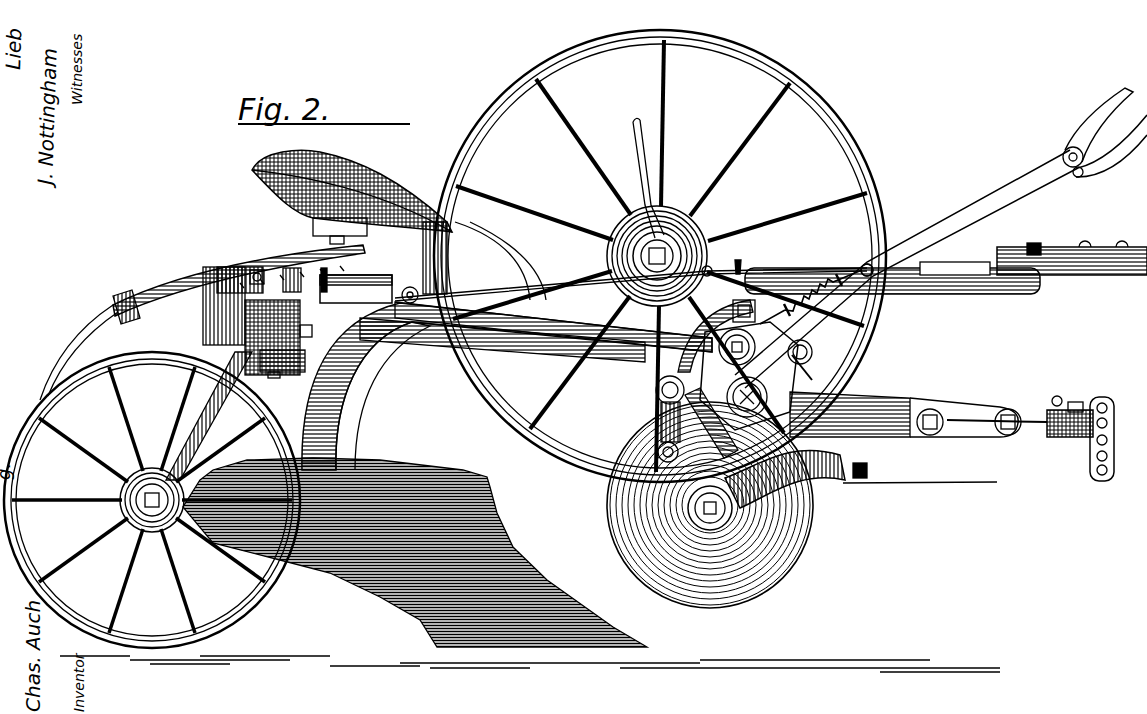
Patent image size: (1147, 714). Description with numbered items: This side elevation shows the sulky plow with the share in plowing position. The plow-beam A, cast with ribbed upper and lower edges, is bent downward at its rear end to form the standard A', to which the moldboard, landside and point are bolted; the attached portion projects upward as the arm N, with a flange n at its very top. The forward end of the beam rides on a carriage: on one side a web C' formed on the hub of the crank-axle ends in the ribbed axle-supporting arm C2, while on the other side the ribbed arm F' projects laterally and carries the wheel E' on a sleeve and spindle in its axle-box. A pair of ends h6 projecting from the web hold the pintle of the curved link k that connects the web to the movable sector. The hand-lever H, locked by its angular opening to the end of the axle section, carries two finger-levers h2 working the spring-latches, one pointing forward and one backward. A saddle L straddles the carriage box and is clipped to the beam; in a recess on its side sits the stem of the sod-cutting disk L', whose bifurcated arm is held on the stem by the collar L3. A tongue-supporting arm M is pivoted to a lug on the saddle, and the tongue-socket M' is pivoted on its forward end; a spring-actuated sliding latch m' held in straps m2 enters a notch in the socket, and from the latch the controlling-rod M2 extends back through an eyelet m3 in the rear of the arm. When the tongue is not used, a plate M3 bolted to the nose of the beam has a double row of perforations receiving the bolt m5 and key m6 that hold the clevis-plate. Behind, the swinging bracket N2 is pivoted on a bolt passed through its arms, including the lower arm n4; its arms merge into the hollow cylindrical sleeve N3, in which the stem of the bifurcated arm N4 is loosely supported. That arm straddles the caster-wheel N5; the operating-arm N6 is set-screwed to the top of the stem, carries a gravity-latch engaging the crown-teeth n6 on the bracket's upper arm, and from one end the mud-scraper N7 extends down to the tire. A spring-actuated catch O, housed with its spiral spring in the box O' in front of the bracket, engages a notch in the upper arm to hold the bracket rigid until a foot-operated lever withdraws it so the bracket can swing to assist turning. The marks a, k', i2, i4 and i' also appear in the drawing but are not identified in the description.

The wheel E' is at (660, 256).
The lever on wheel hub a is at (636, 135).
The controlling-rod M2 is at (815, 272).
The eyelet m3 is at (733, 256).
The standard A' is at (507, 386).
The arm N is at (362, 403).
The ribbed arm F' is at (536, 332).
The caster-wheel N5 is at (152, 500).
The bifurcated arm N4 is at (190, 410).
The swinging bracket N2 is at (247, 321).
The flange n is at (258, 270).
The crown-teeth n6 is at (290, 268).
The arm of swinging bracket n4 is at (274, 383).
The spring-actuated catch O is at (319, 263).
The spring-box O' is at (369, 277).
The operating-arm N6 is at (192, 292).
The hollow cylindrical sleeve N3 is at (141, 290).
The mud-scraper N7 is at (105, 322).
The hand-lever H is at (965, 205).
The finger-levers h2 is at (1106, 140).
The pivot k' is at (883, 294).
The tongue-supporting arm M is at (892, 295).
The tongue-socket M' is at (1072, 274).
The sliding latch m' is at (955, 257).
The straps m2 is at (1005, 262).
The curved strap k is at (716, 336).
The web C' is at (741, 390).
The pivot bolt i2 is at (777, 390).
The pin i4 is at (795, 362).
The ends h6 is at (655, 392).
The axle-supporting arm C2 is at (655, 428).
The plow-beam A is at (918, 409).
The plate M3 is at (1065, 437).
The key m6 is at (1048, 391).
The bolt m5 is at (1082, 396).
The sod-cutting disk L' is at (710, 505).
The saddle L is at (785, 480).
The collar L3 is at (852, 483).
The bolt i' is at (870, 464).